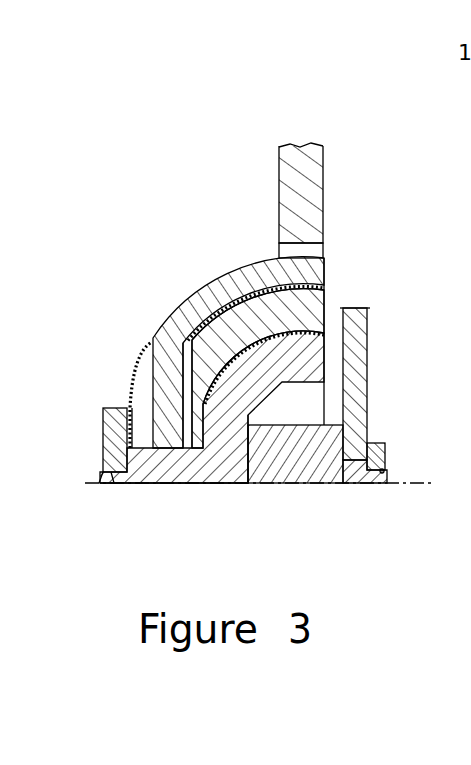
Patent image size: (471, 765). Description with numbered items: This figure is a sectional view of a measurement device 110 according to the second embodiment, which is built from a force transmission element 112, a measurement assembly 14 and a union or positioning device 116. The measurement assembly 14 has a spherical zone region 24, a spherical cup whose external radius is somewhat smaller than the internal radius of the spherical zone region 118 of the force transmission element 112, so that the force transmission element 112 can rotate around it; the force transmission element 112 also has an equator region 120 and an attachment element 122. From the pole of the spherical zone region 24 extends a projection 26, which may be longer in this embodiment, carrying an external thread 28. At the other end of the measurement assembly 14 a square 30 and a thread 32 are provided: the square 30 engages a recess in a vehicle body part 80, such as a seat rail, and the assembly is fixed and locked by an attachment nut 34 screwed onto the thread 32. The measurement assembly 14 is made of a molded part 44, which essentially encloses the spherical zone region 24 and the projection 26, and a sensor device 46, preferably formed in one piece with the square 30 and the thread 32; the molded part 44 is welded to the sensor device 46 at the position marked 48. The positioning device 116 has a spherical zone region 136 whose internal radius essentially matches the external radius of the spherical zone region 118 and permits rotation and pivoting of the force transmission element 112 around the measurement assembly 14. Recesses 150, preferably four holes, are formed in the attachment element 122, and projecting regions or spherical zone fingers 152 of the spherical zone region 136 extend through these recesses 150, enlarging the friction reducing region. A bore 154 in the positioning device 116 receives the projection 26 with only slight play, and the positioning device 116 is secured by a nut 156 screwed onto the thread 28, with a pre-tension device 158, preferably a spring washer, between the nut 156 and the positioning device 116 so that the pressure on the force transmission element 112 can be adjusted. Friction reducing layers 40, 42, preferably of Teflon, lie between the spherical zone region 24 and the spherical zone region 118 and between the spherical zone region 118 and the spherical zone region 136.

The measurement assembly 14 is at (133, 497).
The spherical zone region 24 is at (318, 360).
The projection 26 is at (151, 468).
The external thread 28 is at (112, 476).
The square 30 is at (353, 476).
The thread 32 is at (384, 470).
The attachment nut 34 is at (380, 445).
The friction reducing layer 40 is at (270, 300).
The friction reducing layer 42 is at (213, 316).
The molded part 44 is at (208, 478).
The sensor device 46 is at (289, 470).
The welding position 48 is at (249, 477).
The vehicle body part 80 is at (358, 338).
The measurement device 110 is at (400, 218).
The force transmission element 112 is at (343, 160).
The positioning device 116 is at (168, 330).
The spherical zone region 118 is at (190, 314).
The equator region 120 is at (311, 315).
The attachment element 122 is at (318, 197).
The spherical zone region 136 is at (276, 326).
The recess 150 is at (318, 248).
The projecting region 152 is at (316, 278).
The bore 154 is at (136, 420).
The nut 156 is at (106, 440).
The pre-tension device 158 is at (139, 359).